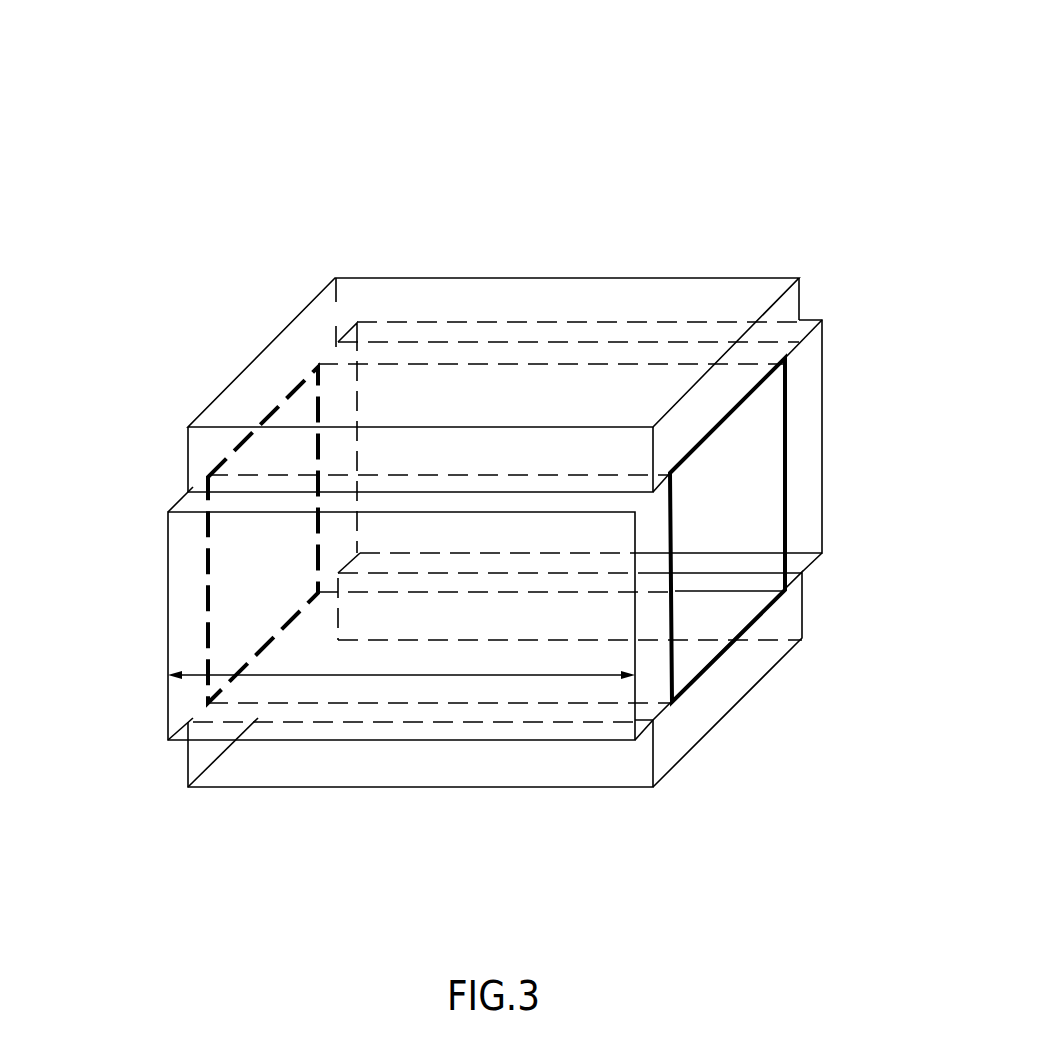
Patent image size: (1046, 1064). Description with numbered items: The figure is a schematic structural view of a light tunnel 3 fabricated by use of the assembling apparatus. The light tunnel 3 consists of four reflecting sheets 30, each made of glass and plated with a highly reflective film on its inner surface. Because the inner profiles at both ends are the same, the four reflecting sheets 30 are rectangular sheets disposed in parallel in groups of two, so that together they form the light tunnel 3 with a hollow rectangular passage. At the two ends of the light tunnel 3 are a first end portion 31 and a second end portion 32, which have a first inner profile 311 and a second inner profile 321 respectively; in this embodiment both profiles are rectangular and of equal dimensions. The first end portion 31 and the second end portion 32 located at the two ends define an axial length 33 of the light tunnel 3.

The light tunnel 3 is at (490, 118).
The reflecting sheet 30 is at (503, 293).
The first end portion 31 is at (341, 250).
The first inner profile 311 is at (208, 560).
The second end portion 32 is at (822, 267).
The second inner profile 321 is at (787, 465).
The axial length 33 is at (401, 664).